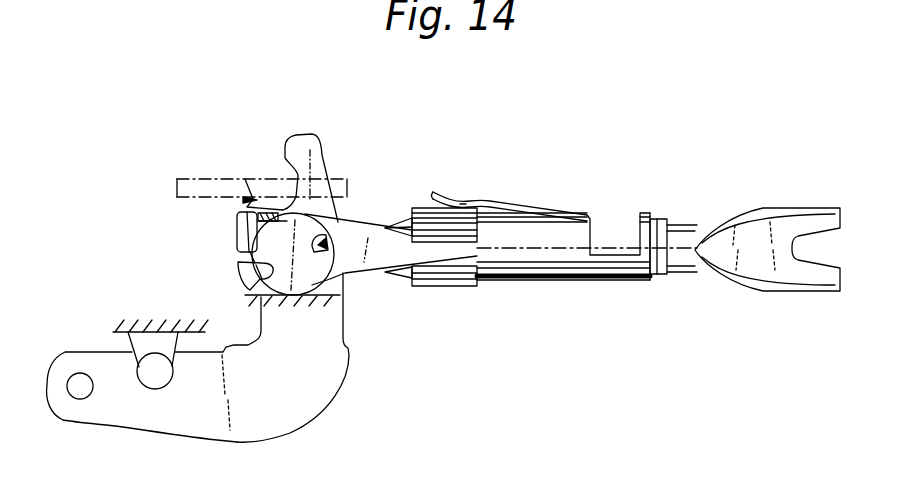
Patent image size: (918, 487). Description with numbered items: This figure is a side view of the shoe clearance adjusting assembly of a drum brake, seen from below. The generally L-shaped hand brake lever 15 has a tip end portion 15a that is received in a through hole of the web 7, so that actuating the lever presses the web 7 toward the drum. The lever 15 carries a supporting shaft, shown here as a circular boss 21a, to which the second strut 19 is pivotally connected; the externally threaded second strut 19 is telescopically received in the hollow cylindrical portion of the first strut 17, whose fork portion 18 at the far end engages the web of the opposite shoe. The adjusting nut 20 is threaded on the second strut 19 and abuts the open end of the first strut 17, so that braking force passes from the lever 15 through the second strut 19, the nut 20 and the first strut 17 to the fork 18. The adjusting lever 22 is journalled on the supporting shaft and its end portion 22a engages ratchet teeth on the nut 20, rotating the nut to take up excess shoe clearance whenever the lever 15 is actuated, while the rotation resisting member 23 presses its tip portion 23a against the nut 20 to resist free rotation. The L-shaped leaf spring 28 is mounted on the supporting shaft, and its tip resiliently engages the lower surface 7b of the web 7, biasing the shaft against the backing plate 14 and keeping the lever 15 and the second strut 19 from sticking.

The web 7 is at (187, 213).
The lower surface of the web 7b is at (208, 217).
The backing plate 14 is at (343, 325).
The hand brake lever 15 is at (328, 390).
The tip end portion of the hand brake lever 15a is at (321, 157).
The first strut 17 is at (680, 225).
The fork portion 18 is at (775, 218).
The second strut 19 is at (390, 224).
The adjusting nut 20 is at (427, 208).
The circular boss 21a is at (341, 283).
The adjusting lever 22 is at (434, 255).
The end portion of the adjusting lever 22a is at (473, 288).
The rotation resisting member 23 is at (557, 213).
The tip portion of the rotation resisting member 23a is at (471, 198).
The leaf spring 28 is at (235, 205).